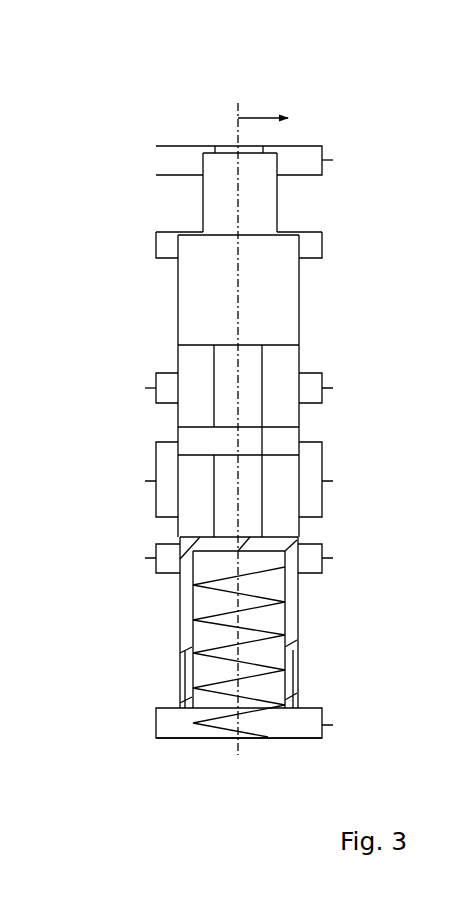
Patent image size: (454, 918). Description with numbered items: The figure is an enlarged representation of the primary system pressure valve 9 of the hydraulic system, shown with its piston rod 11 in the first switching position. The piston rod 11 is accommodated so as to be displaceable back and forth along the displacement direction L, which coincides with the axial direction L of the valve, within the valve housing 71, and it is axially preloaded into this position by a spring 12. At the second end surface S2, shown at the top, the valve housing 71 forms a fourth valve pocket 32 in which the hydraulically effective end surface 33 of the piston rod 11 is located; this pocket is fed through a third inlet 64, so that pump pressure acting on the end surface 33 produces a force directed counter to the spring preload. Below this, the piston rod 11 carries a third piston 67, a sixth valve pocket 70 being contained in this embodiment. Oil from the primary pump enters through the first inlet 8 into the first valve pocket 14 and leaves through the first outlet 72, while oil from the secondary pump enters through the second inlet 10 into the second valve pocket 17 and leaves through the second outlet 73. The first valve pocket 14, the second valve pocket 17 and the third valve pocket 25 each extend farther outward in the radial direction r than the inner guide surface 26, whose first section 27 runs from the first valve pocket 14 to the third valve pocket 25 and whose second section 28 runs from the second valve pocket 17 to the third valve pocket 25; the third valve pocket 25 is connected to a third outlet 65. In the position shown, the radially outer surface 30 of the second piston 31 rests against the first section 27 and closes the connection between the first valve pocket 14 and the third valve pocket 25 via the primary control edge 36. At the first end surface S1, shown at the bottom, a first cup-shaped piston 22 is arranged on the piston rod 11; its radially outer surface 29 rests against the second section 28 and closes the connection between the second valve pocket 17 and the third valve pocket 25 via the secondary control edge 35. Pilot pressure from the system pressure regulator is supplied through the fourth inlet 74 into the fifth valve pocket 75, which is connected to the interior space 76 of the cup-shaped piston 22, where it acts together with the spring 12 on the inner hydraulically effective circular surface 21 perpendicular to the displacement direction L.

The primary system pressure valve 9 is at (158, 313).
The valve housing 71 is at (156, 163).
The third inlet 64 is at (330, 152).
The hydraulically effective end surface 33 is at (225, 147).
The fourth valve pocket 32 is at (305, 163).
The sixth valve pocket 70 is at (168, 246).
The third piston 67 is at (205, 283).
The piston rod 11 is at (312, 283).
The inner guide surface 26 is at (180, 357).
The first section of the guide surface 27 is at (180, 408).
The first valve pocket 14 is at (162, 382).
The first inlet 8 is at (148, 392).
The first outlet 72 is at (332, 380).
The radially outer surface of the second piston 30 is at (300, 433).
The primary control edge 36 is at (178, 428).
The second piston 31 is at (283, 437).
The third outlet 65 is at (131, 481).
The third valve pocket 25 is at (160, 497).
The second section of the guide surface 28 is at (180, 519).
The secondary control edge 35 is at (166, 546).
The second valve pocket 17 is at (151, 557).
The second outlet 73 is at (330, 549).
The spring 12 is at (292, 591).
The second inlet 10 is at (148, 568).
The inner hydraulically effective circular surface 21 is at (217, 553).
The first cup-shaped piston 22 is at (185, 617).
The radially outer surface of the cup-shaped piston 29 is at (183, 653).
The interior space 76 is at (270, 622).
The fourth inlet 74 is at (330, 716).
The fifth valve pocket 75 is at (168, 727).
The second end surface S2 is at (165, 105).
The first end surface S1 is at (213, 757).
The displacement direction / axial direction L is at (237, 137).
The radial direction r is at (257, 118).